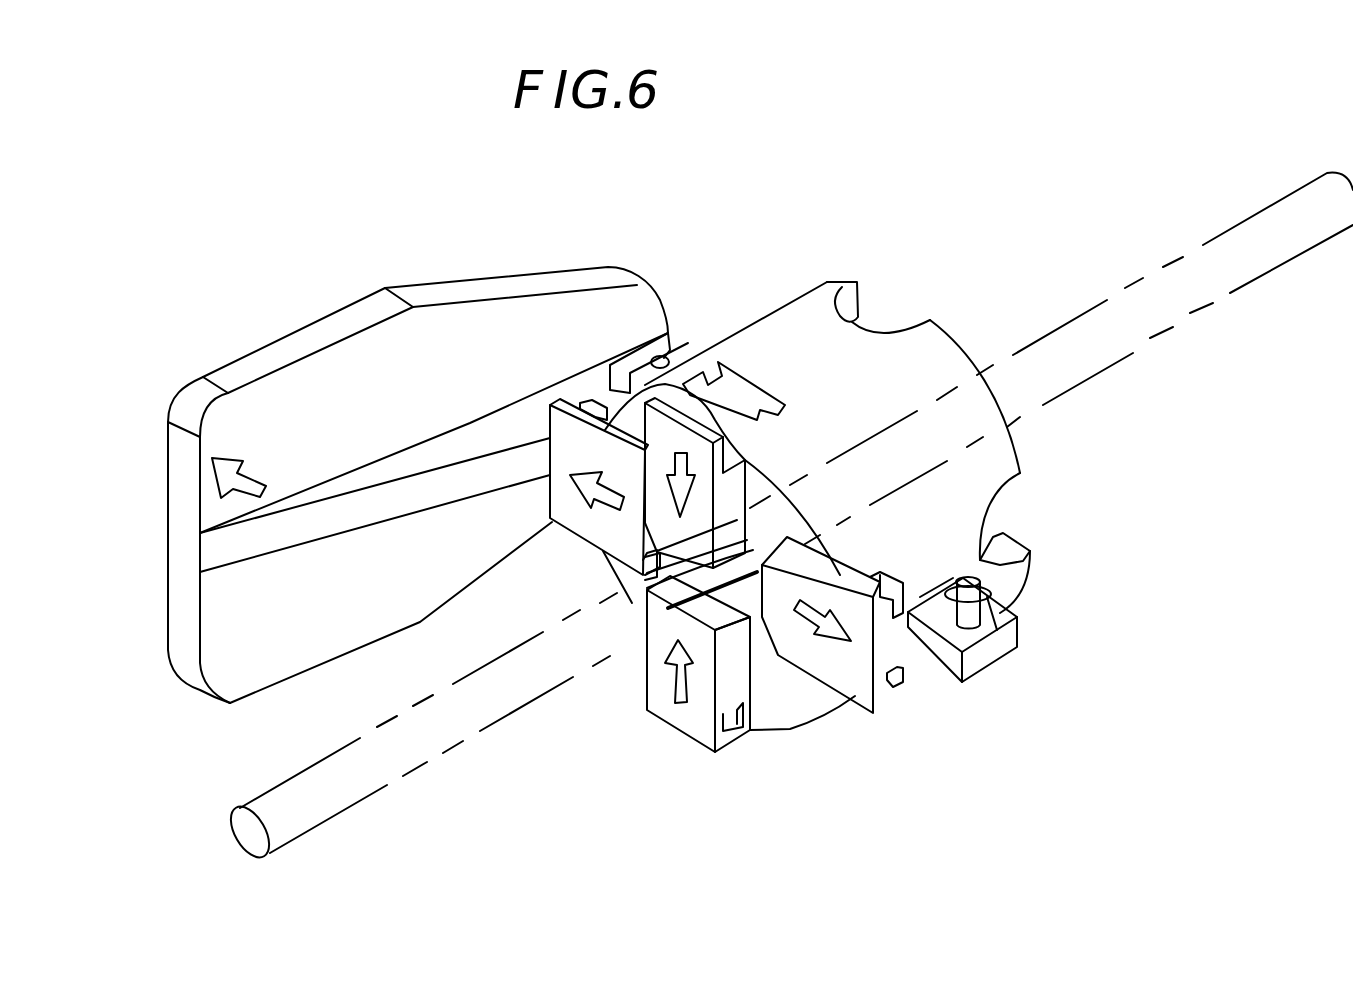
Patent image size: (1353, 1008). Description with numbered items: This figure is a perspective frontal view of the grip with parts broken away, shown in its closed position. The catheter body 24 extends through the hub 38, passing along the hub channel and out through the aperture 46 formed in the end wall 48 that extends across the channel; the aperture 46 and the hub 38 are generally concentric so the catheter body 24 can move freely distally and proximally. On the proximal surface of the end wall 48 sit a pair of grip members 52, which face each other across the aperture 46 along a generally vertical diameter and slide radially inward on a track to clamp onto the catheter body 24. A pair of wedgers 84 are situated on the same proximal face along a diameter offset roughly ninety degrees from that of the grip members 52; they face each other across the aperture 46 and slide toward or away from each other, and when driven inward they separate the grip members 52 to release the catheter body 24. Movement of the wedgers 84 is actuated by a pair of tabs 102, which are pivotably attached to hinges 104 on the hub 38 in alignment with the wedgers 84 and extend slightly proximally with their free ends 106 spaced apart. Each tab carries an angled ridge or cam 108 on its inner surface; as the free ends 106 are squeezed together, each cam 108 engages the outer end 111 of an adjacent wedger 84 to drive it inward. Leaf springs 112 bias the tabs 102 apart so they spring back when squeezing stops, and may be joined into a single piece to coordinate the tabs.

The catheter body 24 is at (1222, 230).
The hub 38 is at (803, 375).
The aperture 46 is at (640, 637).
The end wall 48 is at (800, 523).
The grip members 52 is at (740, 487).
The wedgers 84 is at (590, 525).
The tabs 102 is at (433, 280).
The hinges 104 is at (664, 357).
The free ends 106 is at (168, 503).
The cam 108 is at (513, 423).
The outer end 111 is at (550, 467).
The leaf springs 112 is at (1017, 612).